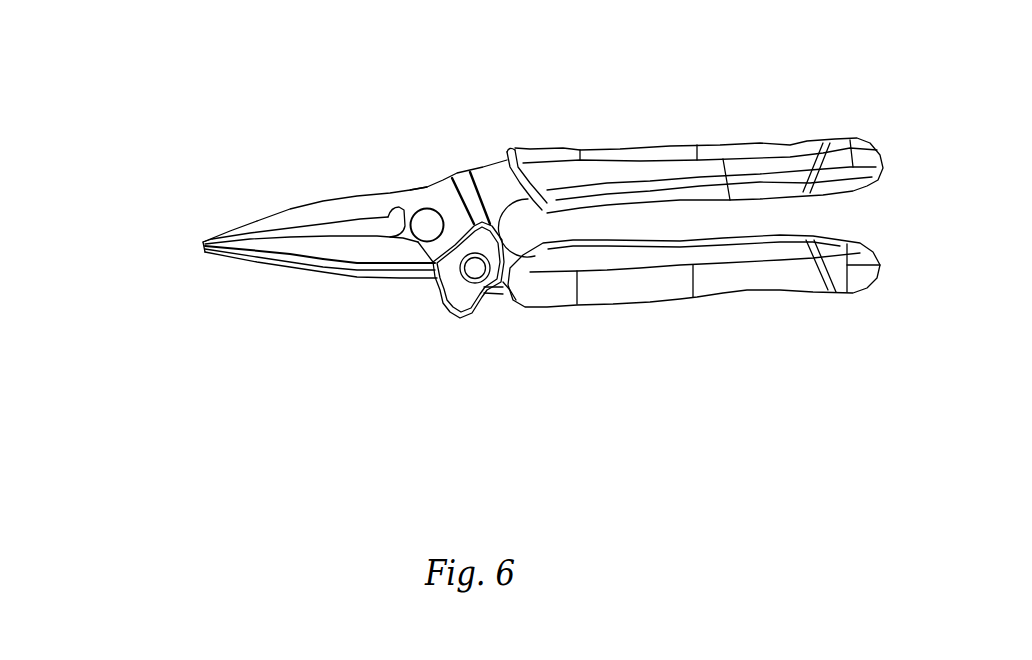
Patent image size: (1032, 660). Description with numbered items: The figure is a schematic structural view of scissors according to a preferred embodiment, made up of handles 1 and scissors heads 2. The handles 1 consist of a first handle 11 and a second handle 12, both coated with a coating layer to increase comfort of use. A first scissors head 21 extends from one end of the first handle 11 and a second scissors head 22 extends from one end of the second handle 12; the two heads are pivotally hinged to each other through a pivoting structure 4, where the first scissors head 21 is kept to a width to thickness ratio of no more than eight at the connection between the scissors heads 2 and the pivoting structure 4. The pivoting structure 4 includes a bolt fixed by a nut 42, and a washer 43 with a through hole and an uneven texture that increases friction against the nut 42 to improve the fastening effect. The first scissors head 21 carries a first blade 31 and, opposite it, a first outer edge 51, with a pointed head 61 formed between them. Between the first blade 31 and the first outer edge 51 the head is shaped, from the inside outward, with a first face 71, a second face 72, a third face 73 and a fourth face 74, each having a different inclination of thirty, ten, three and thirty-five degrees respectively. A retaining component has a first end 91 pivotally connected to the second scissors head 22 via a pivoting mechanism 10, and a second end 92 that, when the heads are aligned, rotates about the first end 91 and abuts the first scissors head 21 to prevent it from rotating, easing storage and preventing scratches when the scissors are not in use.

The handles 1 is at (833, 139).
The scissors heads 2 is at (293, 203).
The pivoting structure 4 is at (413, 202).
The pivoting mechanism 10 is at (488, 292).
The first handle 11 is at (722, 157).
The second handle 12 is at (747, 275).
The first scissors head 21 is at (403, 253).
The second scissors head 22 is at (380, 205).
The first blade 31 is at (318, 220).
The nut 42 is at (428, 221).
The washer 43 is at (420, 247).
The first outer edge 51 is at (316, 268).
The pointed head 61 is at (203, 241).
The first face 71 is at (240, 237).
The second face 72 is at (285, 263).
The third face 73 is at (253, 257).
The fourth face 74 is at (337, 275).
The first end 91 is at (478, 295).
The second end 92 is at (441, 266).